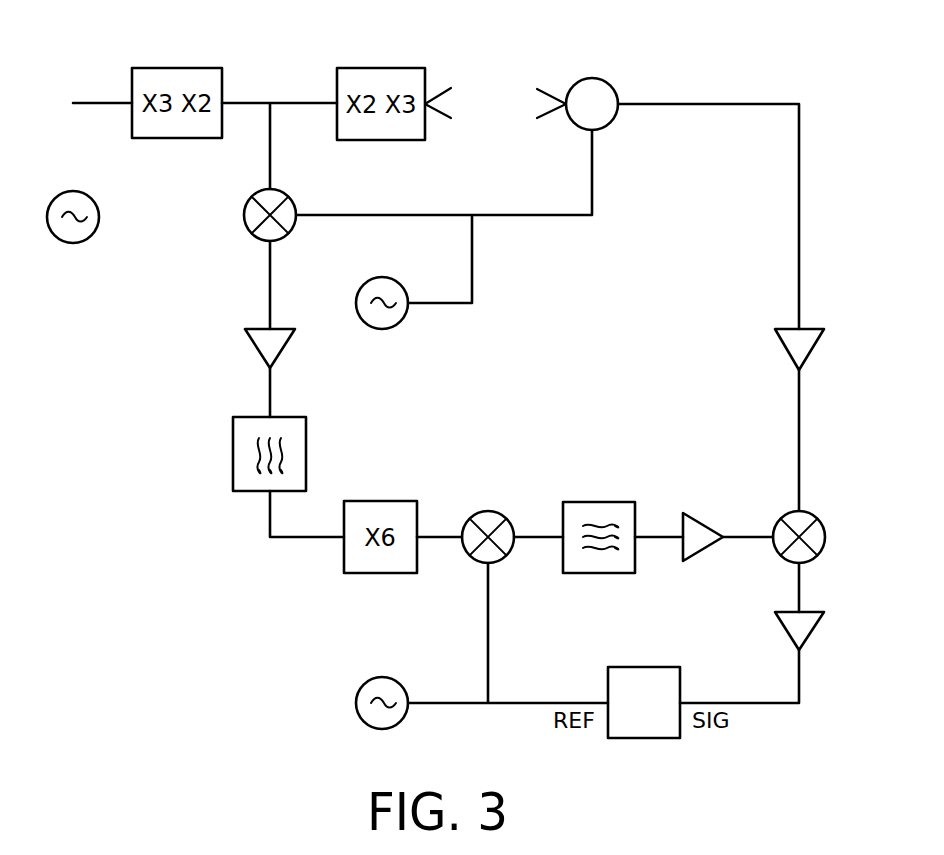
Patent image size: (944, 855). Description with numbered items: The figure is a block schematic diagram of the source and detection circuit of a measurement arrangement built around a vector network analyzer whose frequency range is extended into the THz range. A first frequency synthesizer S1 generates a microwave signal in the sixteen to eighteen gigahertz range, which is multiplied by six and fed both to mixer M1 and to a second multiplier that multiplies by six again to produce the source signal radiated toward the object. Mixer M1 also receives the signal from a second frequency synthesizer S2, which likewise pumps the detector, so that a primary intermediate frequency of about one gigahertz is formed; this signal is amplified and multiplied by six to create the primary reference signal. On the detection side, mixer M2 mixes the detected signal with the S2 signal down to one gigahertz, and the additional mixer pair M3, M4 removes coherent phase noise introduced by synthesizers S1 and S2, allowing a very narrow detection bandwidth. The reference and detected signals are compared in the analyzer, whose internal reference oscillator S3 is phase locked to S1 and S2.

The first frequency synthesizer S1 is at (73, 244).
The second frequency synthesizer S2 is at (382, 329).
The internal VNA reference oscillator S3 is at (382, 677).
The mixer M1 is at (247, 229).
The mixer M2 is at (592, 78).
The mixer M3 is at (488, 511).
The mixer M4 is at (812, 513).